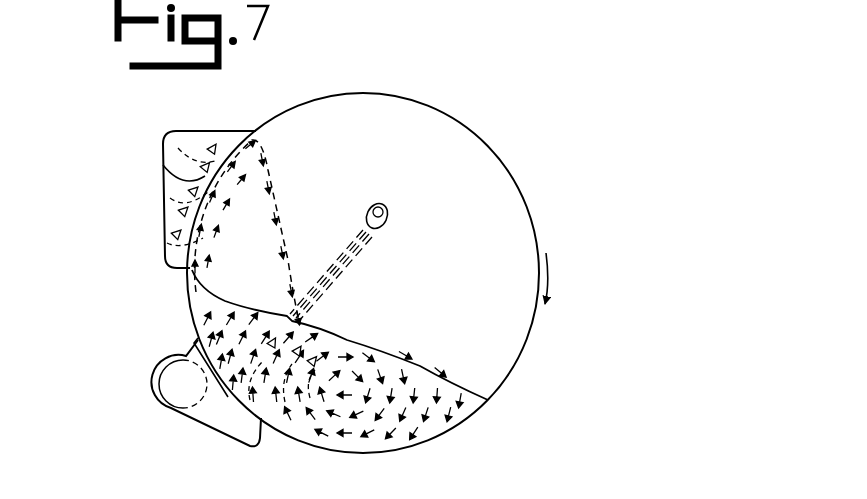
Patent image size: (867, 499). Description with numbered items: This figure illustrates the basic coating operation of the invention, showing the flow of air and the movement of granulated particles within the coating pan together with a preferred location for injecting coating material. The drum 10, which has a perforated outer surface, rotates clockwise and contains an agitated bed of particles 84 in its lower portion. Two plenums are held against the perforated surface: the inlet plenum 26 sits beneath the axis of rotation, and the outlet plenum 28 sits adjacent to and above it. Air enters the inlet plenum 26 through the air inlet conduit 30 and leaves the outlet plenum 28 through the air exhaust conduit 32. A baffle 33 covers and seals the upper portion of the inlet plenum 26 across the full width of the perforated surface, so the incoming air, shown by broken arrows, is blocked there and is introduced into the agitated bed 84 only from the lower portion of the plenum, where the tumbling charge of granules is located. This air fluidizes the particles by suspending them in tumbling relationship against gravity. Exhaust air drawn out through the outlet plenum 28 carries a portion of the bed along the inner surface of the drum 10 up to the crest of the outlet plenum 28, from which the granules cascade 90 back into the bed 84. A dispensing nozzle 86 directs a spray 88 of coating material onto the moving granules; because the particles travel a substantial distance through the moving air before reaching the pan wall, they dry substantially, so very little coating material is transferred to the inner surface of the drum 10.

The drum 10 is at (527, 202).
The inlet plenum 26 is at (210, 430).
The outlet plenum 28 is at (160, 197).
The air inlet conduit 30 is at (165, 393).
The air exhaust conduit 32 is at (178, 143).
The baffle 33 is at (198, 342).
The agitated bed of particles 84 is at (387, 450).
The dispensing nozzle 86 is at (388, 222).
The spray 88 is at (338, 268).
The cascade 90 is at (272, 198).